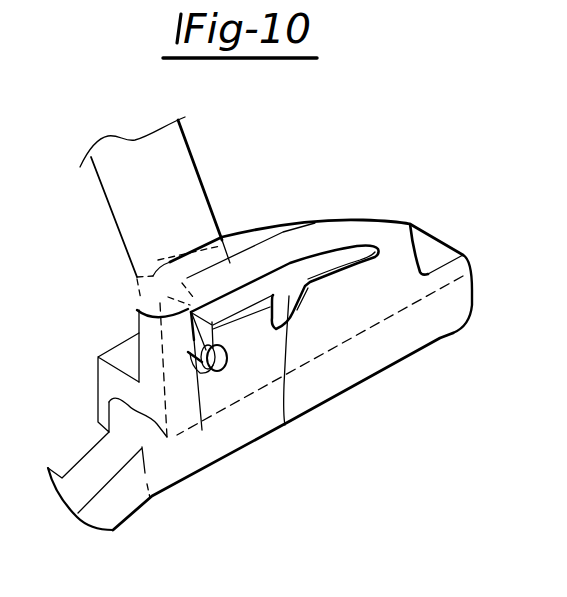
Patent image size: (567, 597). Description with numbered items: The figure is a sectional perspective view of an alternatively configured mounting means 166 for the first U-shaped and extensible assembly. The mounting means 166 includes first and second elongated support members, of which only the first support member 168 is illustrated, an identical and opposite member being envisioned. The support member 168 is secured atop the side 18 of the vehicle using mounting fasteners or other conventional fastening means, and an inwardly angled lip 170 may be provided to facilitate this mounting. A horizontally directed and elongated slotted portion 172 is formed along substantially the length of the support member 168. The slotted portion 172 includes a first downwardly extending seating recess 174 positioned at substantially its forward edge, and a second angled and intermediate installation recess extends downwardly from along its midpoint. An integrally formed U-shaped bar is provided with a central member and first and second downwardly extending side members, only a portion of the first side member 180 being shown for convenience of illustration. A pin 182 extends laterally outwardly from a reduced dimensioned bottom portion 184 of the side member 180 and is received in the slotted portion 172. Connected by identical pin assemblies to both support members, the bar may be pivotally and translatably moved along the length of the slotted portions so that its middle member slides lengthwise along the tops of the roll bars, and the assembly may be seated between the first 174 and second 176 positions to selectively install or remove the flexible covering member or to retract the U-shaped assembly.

The mounting means 166 is at (249, 301).
The first support member 168 is at (318, 222).
The inwardly angled lip 170 is at (102, 405).
The slotted portion 172 is at (289, 276).
The first seating recess 174 is at (202, 430).
The second position 176 is at (285, 425).
The first side member 180 is at (125, 193).
The pin 182 is at (196, 311).
The reduced dimensioned bottom portion 184 is at (143, 311).
The side of the vehicle 18 is at (87, 477).